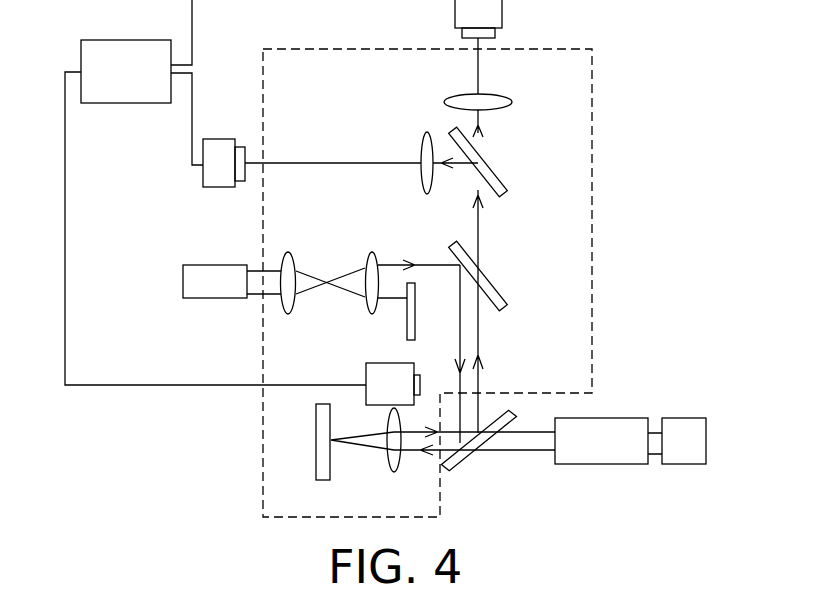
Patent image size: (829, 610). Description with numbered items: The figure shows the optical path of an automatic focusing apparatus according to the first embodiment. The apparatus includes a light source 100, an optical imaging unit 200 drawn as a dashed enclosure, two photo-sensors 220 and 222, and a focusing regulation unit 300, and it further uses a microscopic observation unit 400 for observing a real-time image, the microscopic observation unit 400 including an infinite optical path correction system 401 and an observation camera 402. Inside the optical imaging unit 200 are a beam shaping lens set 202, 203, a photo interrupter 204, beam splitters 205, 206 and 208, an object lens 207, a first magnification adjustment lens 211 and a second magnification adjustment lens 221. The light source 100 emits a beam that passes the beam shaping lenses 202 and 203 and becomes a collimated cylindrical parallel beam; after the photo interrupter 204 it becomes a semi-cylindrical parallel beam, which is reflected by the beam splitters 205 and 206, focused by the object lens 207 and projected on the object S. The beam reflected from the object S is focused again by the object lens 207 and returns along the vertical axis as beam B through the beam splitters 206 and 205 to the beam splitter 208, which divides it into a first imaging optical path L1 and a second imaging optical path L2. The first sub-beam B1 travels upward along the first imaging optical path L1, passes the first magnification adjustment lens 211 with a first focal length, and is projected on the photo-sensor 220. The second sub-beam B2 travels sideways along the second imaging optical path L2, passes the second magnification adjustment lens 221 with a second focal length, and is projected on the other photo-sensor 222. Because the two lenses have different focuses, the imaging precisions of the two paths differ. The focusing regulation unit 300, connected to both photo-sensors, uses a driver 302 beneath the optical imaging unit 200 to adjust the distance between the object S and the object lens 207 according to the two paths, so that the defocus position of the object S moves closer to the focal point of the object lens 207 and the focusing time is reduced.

The light source 100 is at (215, 265).
The optical imaging unit 200 is at (593, 220).
The beam shaping lens 202 is at (288, 252).
The beam shaping lens 203 is at (370, 252).
The photo interrupter 204 is at (407, 327).
The beam splitter 205 is at (505, 268).
The beam splitter 206 is at (470, 465).
The object lens 207 is at (397, 472).
The beam splitter 208 is at (512, 187).
The first magnification adjustment lens 211 is at (513, 102).
The photo-sensor 220 is at (502, 15).
The second magnification adjustment lens 221 is at (427, 135).
The photo-sensor 222 is at (222, 142).
The focusing regulation unit 300 is at (125, 40).
The driver 302 is at (366, 380).
The microscopic observation unit 400 is at (642, 389).
The infinite optical path correction system 401 is at (617, 420).
The observation camera 402 is at (695, 420).
The first imaging optical path L1 is at (480, 80).
The second imaging optical path L2 is at (345, 163).
The beam B is at (490, 311).
The first sub-beam B1 is at (498, 134).
The second sub-beam B2 is at (455, 180).
The object S is at (316, 468).